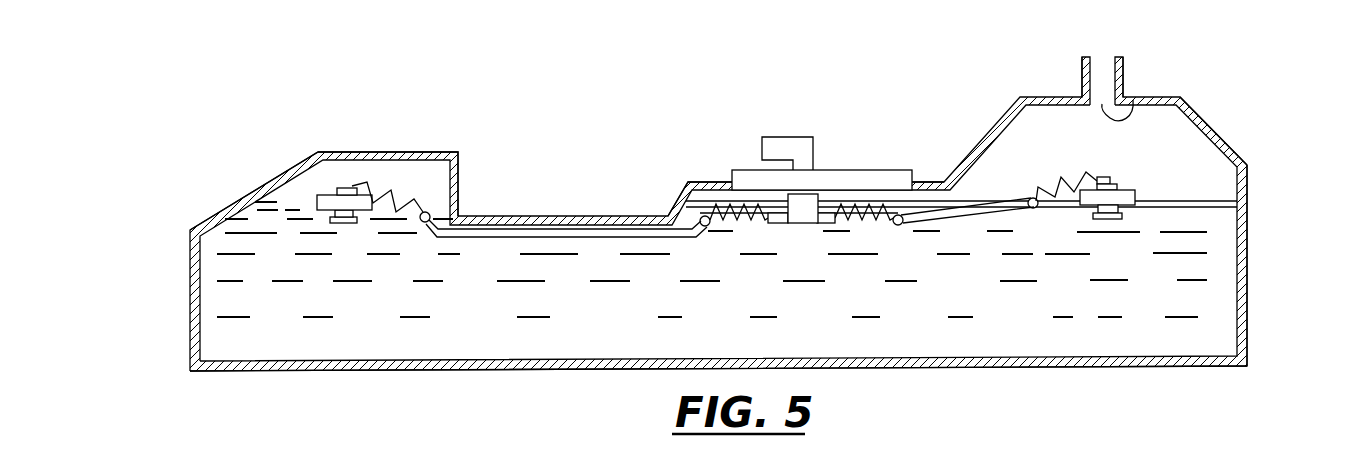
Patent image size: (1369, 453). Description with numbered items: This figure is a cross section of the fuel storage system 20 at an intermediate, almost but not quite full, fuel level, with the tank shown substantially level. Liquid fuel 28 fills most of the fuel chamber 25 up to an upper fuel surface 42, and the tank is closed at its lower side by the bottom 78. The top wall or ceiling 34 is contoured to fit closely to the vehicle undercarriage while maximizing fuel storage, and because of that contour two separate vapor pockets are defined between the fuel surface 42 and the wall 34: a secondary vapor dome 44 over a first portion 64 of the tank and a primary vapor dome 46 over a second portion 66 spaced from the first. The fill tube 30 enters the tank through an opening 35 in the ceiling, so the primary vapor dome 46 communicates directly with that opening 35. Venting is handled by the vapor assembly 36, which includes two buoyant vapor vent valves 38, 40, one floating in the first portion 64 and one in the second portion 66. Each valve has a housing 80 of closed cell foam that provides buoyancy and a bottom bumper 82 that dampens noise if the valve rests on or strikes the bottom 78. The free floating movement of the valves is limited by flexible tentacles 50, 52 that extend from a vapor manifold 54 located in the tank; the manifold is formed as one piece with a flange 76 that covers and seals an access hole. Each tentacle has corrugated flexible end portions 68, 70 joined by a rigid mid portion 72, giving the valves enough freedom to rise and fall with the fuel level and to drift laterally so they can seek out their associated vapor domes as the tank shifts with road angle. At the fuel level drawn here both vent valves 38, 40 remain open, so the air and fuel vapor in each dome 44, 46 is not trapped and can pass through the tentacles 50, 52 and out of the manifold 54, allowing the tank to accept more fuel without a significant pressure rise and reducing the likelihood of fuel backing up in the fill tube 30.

The fuel storage system 20 is at (1200, 80).
The fuel chamber 25 is at (1048, 342).
The liquid fuel 28 is at (628, 334).
The fill tube 30 is at (1080, 83).
The top wall or ceiling 34 is at (712, 188).
The opening 35 is at (1133, 100).
The vapor assembly 36 is at (864, 160).
The vapor vent valve 38 is at (347, 192).
The vapor vent valve 40 is at (1120, 188).
The upper fuel surface 42 is at (1208, 200).
The secondary vapor dome 44 is at (418, 178).
The primary vapor dome 46 is at (1162, 133).
The tentacle 50 is at (478, 244).
The tentacle 52 is at (974, 230).
The vapor manifold 54 is at (803, 233).
The first portion 64 is at (252, 228).
The second portion 66 is at (1212, 242).
The corrugated flexible end portion 68 is at (733, 232).
The corrugated flexible end portion 70 is at (1058, 181).
The rigid mid portion 72 is at (532, 232).
The flange 76 is at (890, 180).
The bottom 78 is at (572, 370).
The housing 80 is at (318, 224).
The bottom bumper 82 is at (343, 226).